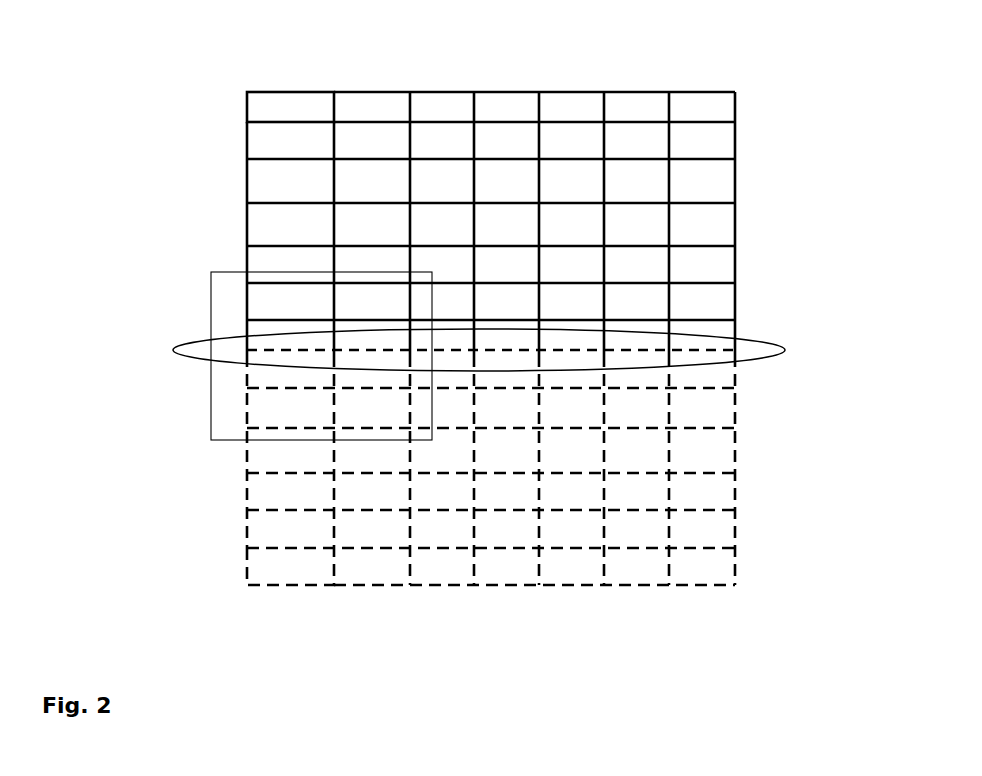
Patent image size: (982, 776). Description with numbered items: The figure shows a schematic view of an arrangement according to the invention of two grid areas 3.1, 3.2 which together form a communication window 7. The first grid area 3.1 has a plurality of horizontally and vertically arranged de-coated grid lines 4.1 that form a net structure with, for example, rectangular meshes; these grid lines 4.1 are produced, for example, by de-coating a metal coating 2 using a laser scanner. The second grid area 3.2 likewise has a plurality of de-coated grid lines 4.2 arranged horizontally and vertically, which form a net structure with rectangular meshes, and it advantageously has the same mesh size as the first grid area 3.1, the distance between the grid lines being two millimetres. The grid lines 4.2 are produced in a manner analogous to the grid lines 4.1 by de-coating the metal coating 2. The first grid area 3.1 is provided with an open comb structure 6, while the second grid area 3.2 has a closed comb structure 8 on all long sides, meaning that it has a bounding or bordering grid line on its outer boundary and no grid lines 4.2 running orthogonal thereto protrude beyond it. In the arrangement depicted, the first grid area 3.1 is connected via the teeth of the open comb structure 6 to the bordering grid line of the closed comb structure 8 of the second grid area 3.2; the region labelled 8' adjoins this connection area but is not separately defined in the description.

The communication window 7 is at (776, 82).
The first grid area 3.1 is at (235, 172).
The grid lines 4.1 is at (327, 110).
The metal coating 2 is at (707, 528).
The second grid area 3.2 is at (238, 497).
The grid lines 4.2 is at (332, 586).
The open comb structure 6 is at (715, 329).
The closed comb structure 8 is at (456, 347).
The column region 8' is at (271, 356).